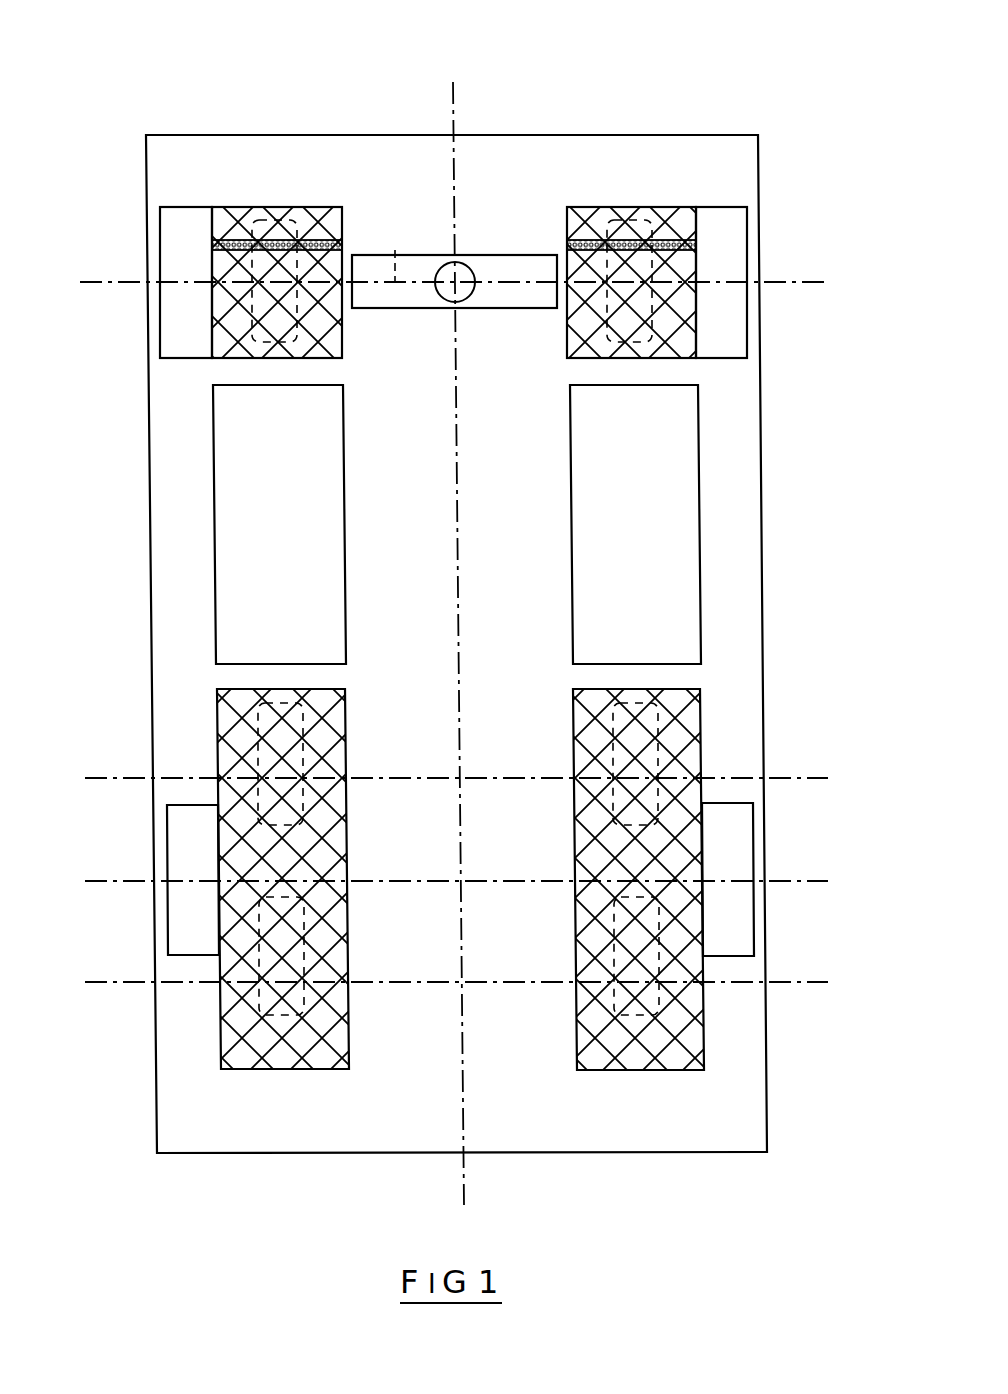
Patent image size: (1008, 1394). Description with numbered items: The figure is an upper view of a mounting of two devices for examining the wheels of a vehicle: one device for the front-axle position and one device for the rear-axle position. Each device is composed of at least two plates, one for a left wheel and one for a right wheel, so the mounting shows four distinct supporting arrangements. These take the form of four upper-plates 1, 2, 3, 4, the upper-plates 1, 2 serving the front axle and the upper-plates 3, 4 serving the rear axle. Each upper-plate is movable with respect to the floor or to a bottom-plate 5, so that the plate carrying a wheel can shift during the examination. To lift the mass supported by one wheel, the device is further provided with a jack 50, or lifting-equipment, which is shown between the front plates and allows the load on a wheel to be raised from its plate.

The upper-plate 1 is at (202, 212).
The upper-plate 2 is at (631, 180).
The upper-plate 3 is at (197, 929).
The upper-plate 4 is at (663, 994).
The bottom-plate 5 is at (783, 228).
The jack 50 is at (808, 461).